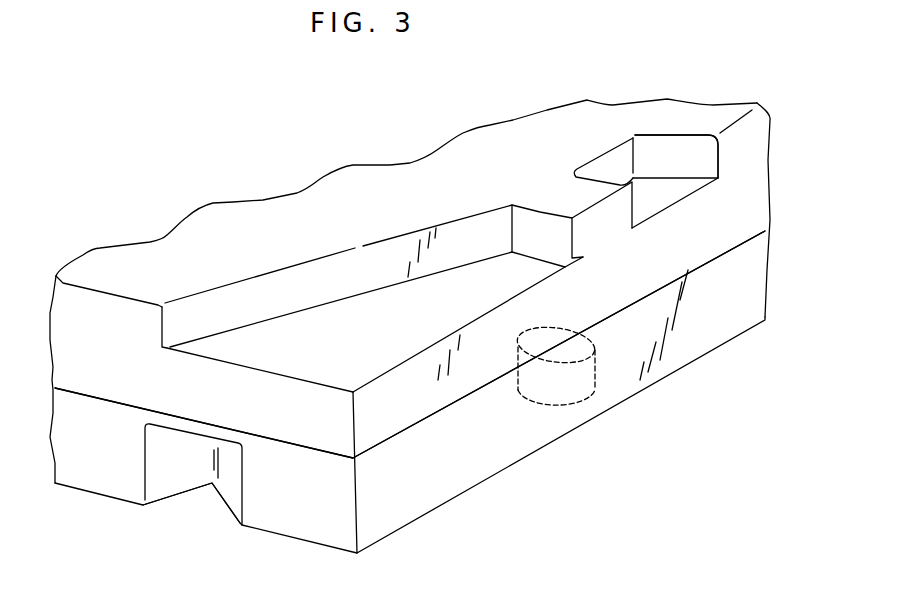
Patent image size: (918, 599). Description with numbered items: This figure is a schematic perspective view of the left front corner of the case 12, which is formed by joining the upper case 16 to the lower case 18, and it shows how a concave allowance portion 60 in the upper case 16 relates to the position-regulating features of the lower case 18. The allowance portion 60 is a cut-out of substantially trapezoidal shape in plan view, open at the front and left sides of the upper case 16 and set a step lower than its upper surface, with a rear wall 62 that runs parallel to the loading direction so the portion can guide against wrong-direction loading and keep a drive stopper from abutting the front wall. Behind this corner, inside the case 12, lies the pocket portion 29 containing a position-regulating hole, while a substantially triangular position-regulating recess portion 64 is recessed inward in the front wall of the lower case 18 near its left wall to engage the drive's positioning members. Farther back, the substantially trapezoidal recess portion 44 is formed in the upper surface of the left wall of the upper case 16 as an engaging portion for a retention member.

The case 12 is at (397, 313).
The upper case 16 is at (62, 310).
The lower case 18 is at (62, 428).
The pocket portion 29 is at (572, 387).
The recess portion 44 is at (660, 192).
The allowance portion 60 is at (330, 330).
The rear wall 62 is at (543, 232).
The position-regulating recess portion 64 is at (170, 480).